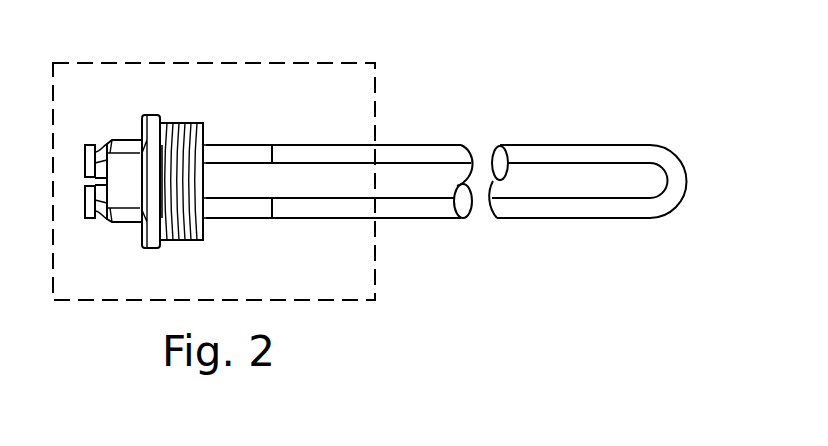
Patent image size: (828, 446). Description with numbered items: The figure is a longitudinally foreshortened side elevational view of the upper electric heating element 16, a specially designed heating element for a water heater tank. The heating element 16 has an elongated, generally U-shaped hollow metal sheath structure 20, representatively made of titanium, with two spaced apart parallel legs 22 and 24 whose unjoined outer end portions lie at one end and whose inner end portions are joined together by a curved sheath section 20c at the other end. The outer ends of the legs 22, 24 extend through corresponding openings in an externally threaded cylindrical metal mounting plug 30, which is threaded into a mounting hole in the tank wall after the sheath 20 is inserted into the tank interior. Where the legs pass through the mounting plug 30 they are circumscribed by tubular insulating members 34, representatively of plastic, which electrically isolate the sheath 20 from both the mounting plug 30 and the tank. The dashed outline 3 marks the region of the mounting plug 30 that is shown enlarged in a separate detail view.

The detail region of fitting (FIG. 3) 3 is at (171, 63).
The upper electric heating element 16 is at (343, 165).
The sheath structure 20 is at (624, 151).
The curved sheath section 20c is at (687, 181).
The leg 22 is at (338, 145).
The leg 24 is at (417, 219).
The mounting plug 30 is at (130, 142).
The tubular insulating members 34 is at (226, 152).